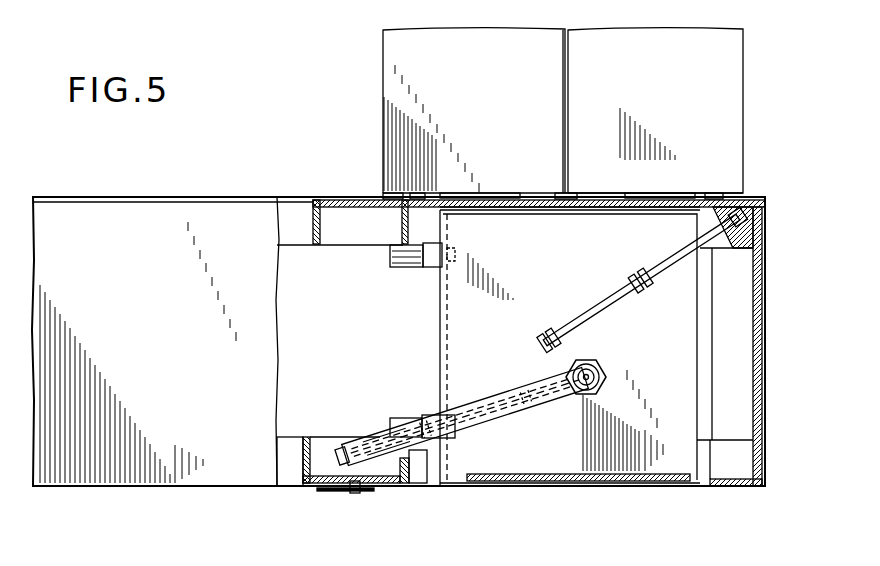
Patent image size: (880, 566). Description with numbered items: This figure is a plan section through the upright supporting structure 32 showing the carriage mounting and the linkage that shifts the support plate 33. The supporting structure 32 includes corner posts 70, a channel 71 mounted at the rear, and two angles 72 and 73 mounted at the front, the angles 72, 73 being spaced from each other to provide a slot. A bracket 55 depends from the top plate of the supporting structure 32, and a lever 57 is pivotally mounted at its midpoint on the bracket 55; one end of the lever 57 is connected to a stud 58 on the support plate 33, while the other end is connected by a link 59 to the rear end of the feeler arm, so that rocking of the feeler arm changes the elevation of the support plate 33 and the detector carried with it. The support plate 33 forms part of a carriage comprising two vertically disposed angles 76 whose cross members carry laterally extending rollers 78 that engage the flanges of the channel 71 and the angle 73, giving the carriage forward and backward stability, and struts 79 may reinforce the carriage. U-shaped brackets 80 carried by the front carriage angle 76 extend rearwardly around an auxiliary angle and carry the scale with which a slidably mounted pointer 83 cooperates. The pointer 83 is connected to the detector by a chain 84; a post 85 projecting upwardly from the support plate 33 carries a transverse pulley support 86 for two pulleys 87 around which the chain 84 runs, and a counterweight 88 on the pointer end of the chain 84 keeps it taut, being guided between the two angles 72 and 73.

The upright supporting structure 32 is at (226, 487).
The support plate 33 is at (676, 308).
The bracket 55 is at (645, 276).
The lever 57 is at (630, 294).
The stud 58 is at (540, 343).
The link 59 is at (737, 230).
The corner posts 70 is at (740, 486).
The channel 71 is at (322, 240).
The angle 72 is at (303, 452).
The angle 73 is at (388, 492).
The vertically disposed angles 76 is at (457, 214).
The rollers 78 is at (410, 265).
The struts 79 is at (570, 486).
The U-shaped brackets 80 is at (432, 485).
The pointer 83 is at (338, 490).
The chain 84 is at (604, 372).
The post 85 is at (470, 435).
The transverse pulley support 86 is at (460, 418).
The pulleys 87 is at (556, 405).
The counterweight 88 is at (325, 438).